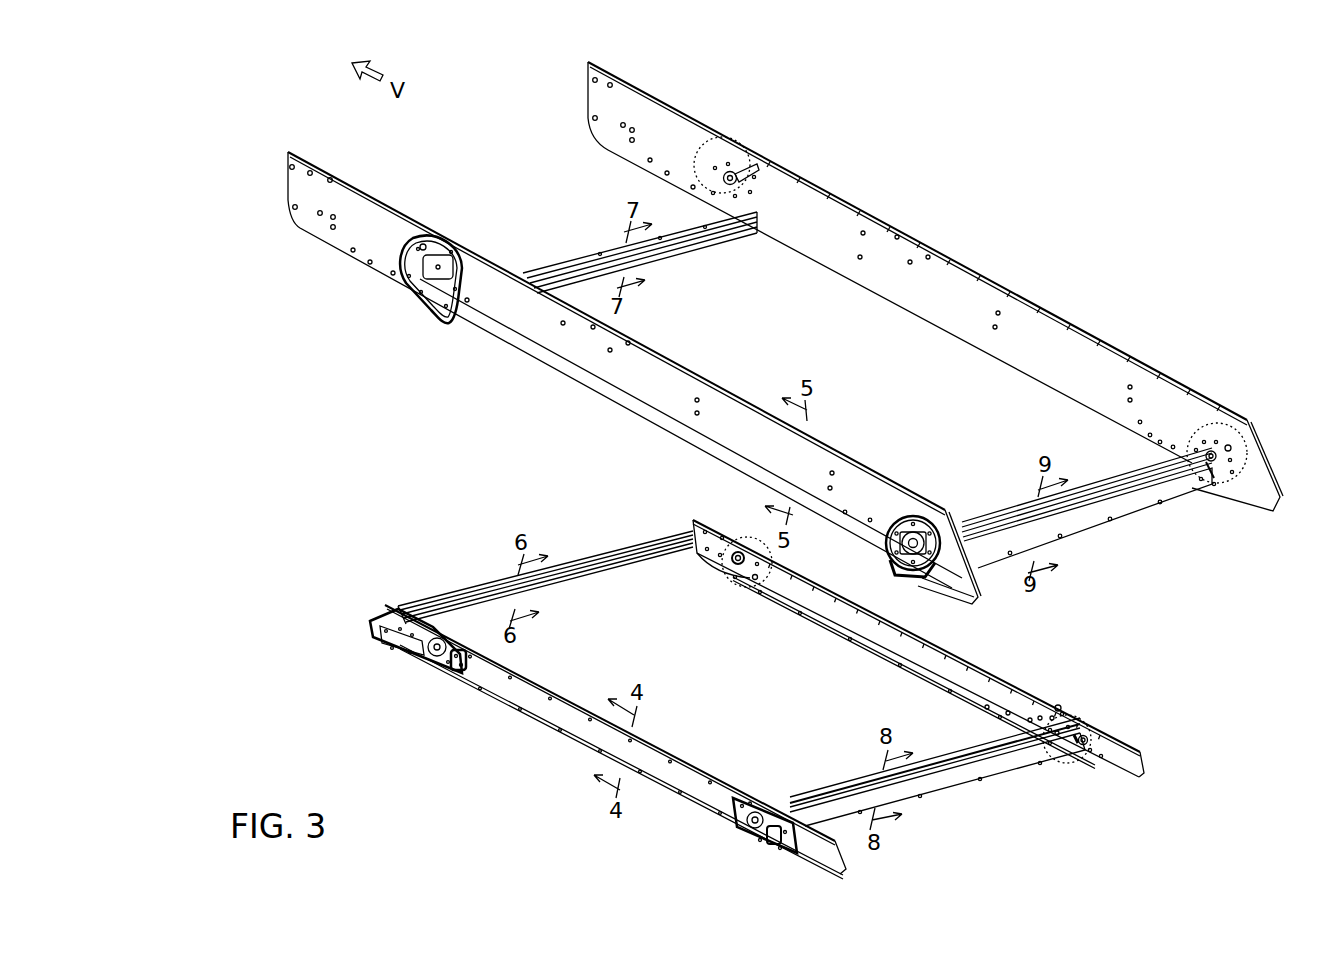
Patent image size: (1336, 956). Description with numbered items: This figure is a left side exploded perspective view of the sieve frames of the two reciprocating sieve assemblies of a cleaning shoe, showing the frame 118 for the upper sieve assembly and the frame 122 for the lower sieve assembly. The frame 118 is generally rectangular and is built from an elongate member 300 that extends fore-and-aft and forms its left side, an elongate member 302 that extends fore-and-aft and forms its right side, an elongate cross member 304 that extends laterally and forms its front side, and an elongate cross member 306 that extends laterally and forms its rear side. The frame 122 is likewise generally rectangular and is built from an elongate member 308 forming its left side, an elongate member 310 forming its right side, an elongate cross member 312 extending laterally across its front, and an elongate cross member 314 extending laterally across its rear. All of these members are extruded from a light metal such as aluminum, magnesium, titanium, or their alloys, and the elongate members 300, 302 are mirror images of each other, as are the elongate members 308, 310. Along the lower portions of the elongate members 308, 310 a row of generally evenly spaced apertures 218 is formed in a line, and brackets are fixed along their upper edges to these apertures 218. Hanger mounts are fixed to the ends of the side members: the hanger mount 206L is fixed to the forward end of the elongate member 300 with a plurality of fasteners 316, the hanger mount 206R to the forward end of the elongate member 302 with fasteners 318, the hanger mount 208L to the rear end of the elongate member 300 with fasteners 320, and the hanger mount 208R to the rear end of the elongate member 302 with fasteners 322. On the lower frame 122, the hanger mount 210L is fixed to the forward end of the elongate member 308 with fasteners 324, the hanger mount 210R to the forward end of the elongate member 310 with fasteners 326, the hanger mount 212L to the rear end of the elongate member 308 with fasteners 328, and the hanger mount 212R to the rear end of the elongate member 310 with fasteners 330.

The frame 118 is at (790, 333).
The frame 122 is at (742, 676).
The hanger mount 206L is at (427, 246).
The hanger mount 206R is at (727, 137).
The hanger mount 208L is at (890, 520).
The hanger mount 208R is at (1205, 440).
The hanger mount 210L is at (428, 657).
The hanger mount 210R is at (706, 525).
The hanger mount 212L is at (773, 833).
The hanger mount 212R is at (1045, 708).
The apertures 218 is at (947, 693).
The elongate member 300 is at (673, 384).
The elongate member 302 is at (878, 282).
The elongate cross member 304 is at (677, 257).
The elongate cross member 306 is at (1123, 510).
The elongate member 308 is at (507, 687).
The elongate member 310 is at (813, 602).
The elongate cross member 312 is at (578, 583).
The elongate cross member 314 is at (955, 775).
The fasteners 316 is at (420, 246).
The fasteners 318 is at (748, 177).
The fasteners 320 is at (922, 518).
The fasteners 322 is at (1227, 448).
The fasteners 324 is at (462, 682).
The fasteners 326 is at (755, 577).
The fasteners 328 is at (737, 823).
The fasteners 330 is at (1057, 707).